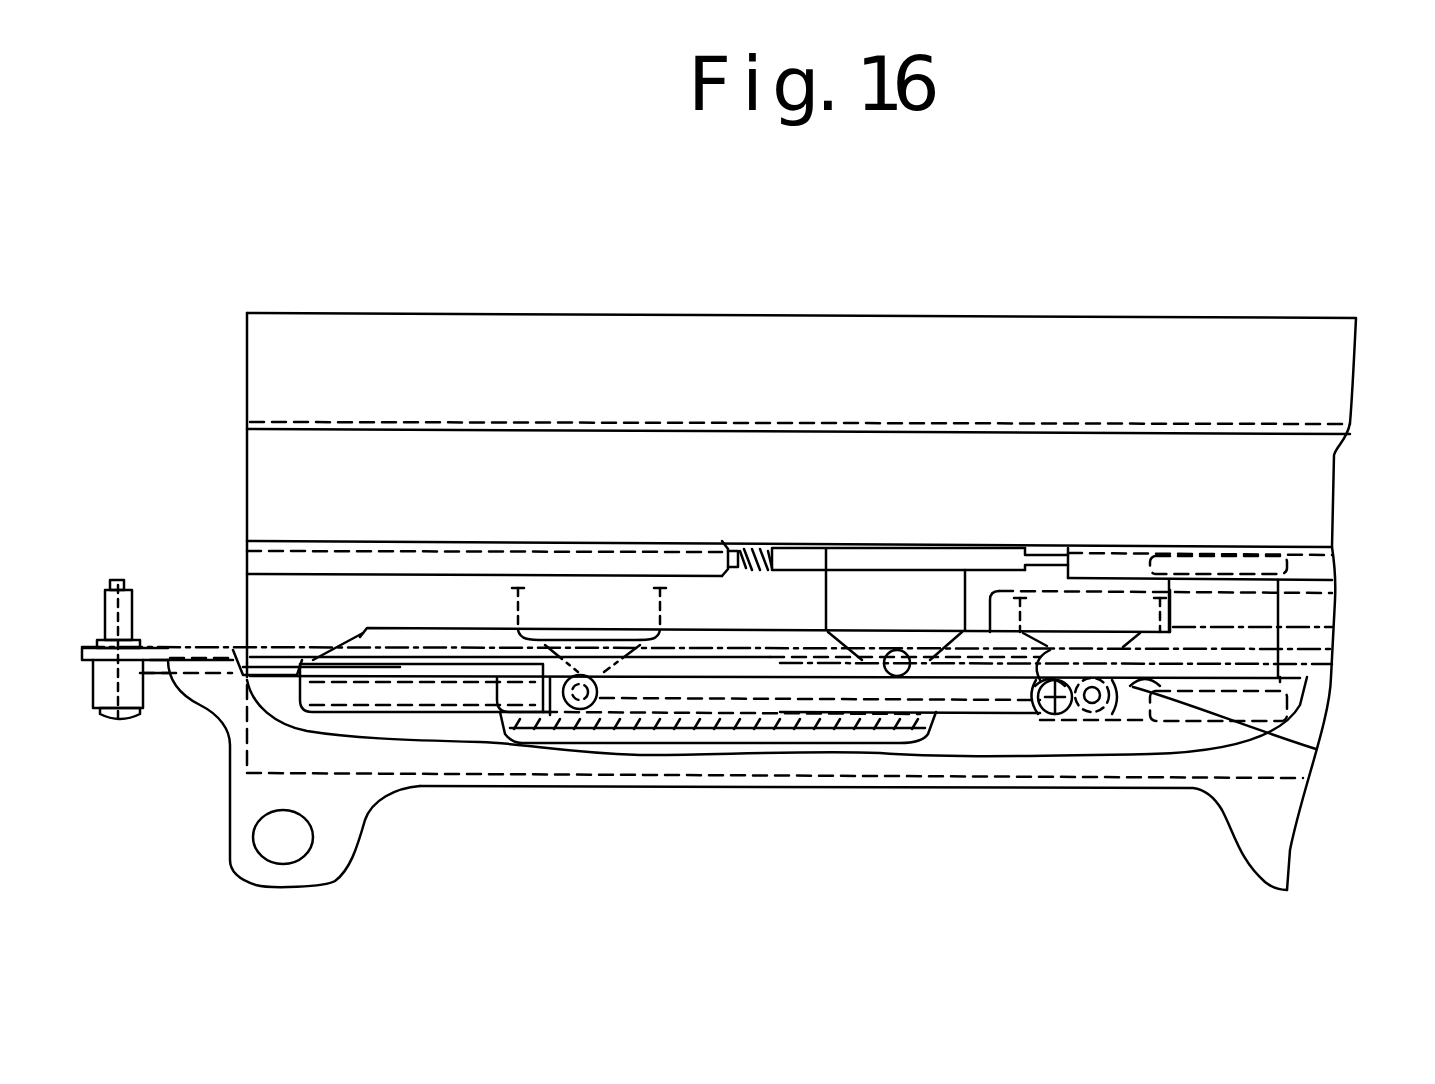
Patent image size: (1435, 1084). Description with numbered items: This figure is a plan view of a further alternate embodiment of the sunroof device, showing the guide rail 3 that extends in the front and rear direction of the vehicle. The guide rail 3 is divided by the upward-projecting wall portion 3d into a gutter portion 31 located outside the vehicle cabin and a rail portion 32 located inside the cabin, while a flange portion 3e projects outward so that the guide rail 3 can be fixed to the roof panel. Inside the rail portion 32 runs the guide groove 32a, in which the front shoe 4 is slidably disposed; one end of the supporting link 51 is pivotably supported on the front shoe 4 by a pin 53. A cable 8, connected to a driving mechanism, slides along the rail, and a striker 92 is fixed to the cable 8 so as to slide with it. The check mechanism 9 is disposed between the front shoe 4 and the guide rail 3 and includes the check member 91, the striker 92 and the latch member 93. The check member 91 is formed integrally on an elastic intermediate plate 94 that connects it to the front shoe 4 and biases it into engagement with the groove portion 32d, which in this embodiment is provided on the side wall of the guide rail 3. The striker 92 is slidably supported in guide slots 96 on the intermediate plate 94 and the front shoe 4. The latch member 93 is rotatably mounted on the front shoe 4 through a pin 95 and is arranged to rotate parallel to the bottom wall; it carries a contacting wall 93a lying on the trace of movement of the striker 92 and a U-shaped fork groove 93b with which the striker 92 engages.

The guide rail 3 is at (875, 313).
The gutter portion 31 is at (284, 496).
The rail portion 32 is at (418, 598).
The wall portion 3d is at (600, 558).
The flange portion 3e is at (1052, 333).
The cable 8 is at (753, 545).
The front shoe 4 is at (360, 637).
The supporting link 51 is at (188, 648).
The pin 53 is at (118, 722).
The striker 92 is at (897, 650).
The check mechanism 9 is at (983, 686).
The guide groove 32a is at (793, 706).
The intermediate plate 94 is at (703, 687).
The guide slot 96 is at (593, 697).
The check member 91 is at (1057, 713).
The pin 95 is at (1107, 710).
The groove portion 32d is at (1047, 717).
The latch member 93 is at (1320, 750).
The contacting wall 93a is at (1090, 682).
The fork groove 93b is at (1092, 686).